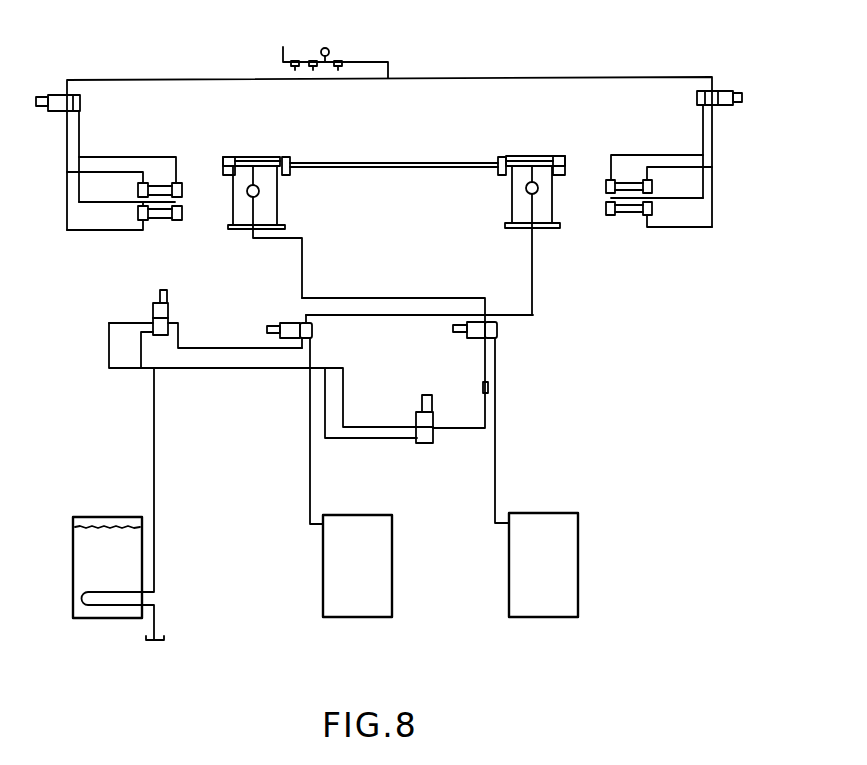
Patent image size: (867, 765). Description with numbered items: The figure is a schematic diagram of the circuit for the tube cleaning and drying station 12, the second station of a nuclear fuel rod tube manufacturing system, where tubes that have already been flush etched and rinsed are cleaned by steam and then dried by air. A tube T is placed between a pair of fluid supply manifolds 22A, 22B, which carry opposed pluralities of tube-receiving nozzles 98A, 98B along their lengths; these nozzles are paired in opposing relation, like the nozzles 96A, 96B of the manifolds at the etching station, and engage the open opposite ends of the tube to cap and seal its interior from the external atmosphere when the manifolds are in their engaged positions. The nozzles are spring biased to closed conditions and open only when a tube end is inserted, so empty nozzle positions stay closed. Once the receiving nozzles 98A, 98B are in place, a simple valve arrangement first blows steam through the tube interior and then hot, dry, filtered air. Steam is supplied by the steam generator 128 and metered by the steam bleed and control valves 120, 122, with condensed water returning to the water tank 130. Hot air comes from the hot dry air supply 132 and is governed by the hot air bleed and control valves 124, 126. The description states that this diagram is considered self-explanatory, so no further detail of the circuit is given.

The tube cleaning and drying station 12 is at (762, 67).
The nozzles 96A is at (633, 180).
The nozzles 96B is at (155, 184).
The nozzles 98A is at (504, 157).
The nozzles 98B is at (281, 157).
The tube T is at (369, 163).
The fluid supply manifold 22A is at (512, 205).
The fluid supply manifold 22B is at (277, 210).
The steam bleed valve 120 is at (152, 313).
The steam control valve 122 is at (288, 340).
The hot air bleed valve 124 is at (433, 417).
The hot air control valve 126 is at (498, 328).
The steam generator 128 is at (345, 620).
The water tank 130 is at (105, 620).
The hot dry air supply 132 is at (560, 620).